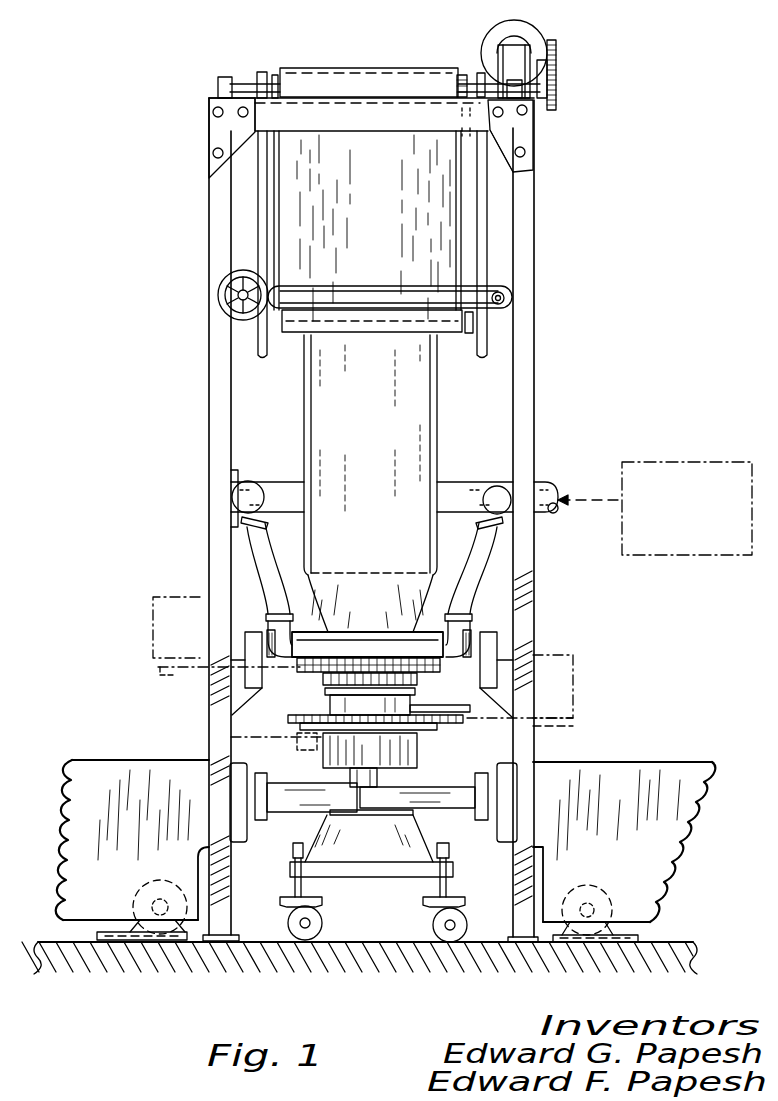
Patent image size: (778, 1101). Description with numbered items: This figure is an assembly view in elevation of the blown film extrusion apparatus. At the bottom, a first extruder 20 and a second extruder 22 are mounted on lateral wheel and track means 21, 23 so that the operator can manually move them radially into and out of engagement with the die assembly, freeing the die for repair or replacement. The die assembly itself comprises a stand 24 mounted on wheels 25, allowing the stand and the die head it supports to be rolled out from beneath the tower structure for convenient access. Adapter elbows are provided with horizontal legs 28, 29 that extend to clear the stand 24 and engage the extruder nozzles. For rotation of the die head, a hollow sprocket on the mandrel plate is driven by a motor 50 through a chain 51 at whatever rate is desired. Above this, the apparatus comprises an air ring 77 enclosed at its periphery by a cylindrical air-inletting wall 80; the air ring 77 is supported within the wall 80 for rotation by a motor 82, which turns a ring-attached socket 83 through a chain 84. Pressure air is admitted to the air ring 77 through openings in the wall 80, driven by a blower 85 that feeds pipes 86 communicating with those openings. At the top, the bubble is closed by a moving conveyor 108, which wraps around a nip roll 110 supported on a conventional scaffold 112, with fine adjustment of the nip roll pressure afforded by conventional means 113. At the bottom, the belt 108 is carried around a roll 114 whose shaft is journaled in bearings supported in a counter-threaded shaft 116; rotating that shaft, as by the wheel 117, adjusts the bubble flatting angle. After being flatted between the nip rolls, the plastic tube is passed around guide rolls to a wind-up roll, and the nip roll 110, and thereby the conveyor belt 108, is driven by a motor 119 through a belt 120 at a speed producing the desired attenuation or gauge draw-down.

The first extruder 20 is at (90, 770).
The lateral wheel and track means 21 is at (137, 927).
The second extruder 22 is at (655, 748).
The lateral wheel and track means 23 is at (610, 930).
The stand 24 is at (372, 853).
The wheels 25 is at (390, 925).
The horizontal leg 28 is at (292, 798).
The horizontal leg 29 is at (457, 777).
The motor 50 is at (558, 692).
The chain 51 is at (550, 720).
The air ring 77 is at (402, 644).
The cylindrical air inletting wall 80 is at (370, 483).
The motor 82 is at (172, 597).
The ring-attached socket 83 is at (450, 698).
The chain 84 is at (292, 676).
The blower 85 is at (682, 547).
The pipes 86 is at (479, 532).
The moving conveyor 108 is at (392, 205).
The nip roll 110 is at (280, 68).
The scaffold 112 is at (213, 245).
The nip roll pressure adjustment means 113 is at (513, 107).
The roll 114 is at (467, 337).
The counter-threaded shaft 116 is at (513, 307).
The wheel 117 is at (218, 298).
The motor 119 is at (497, 44).
The belt 120 is at (556, 53).